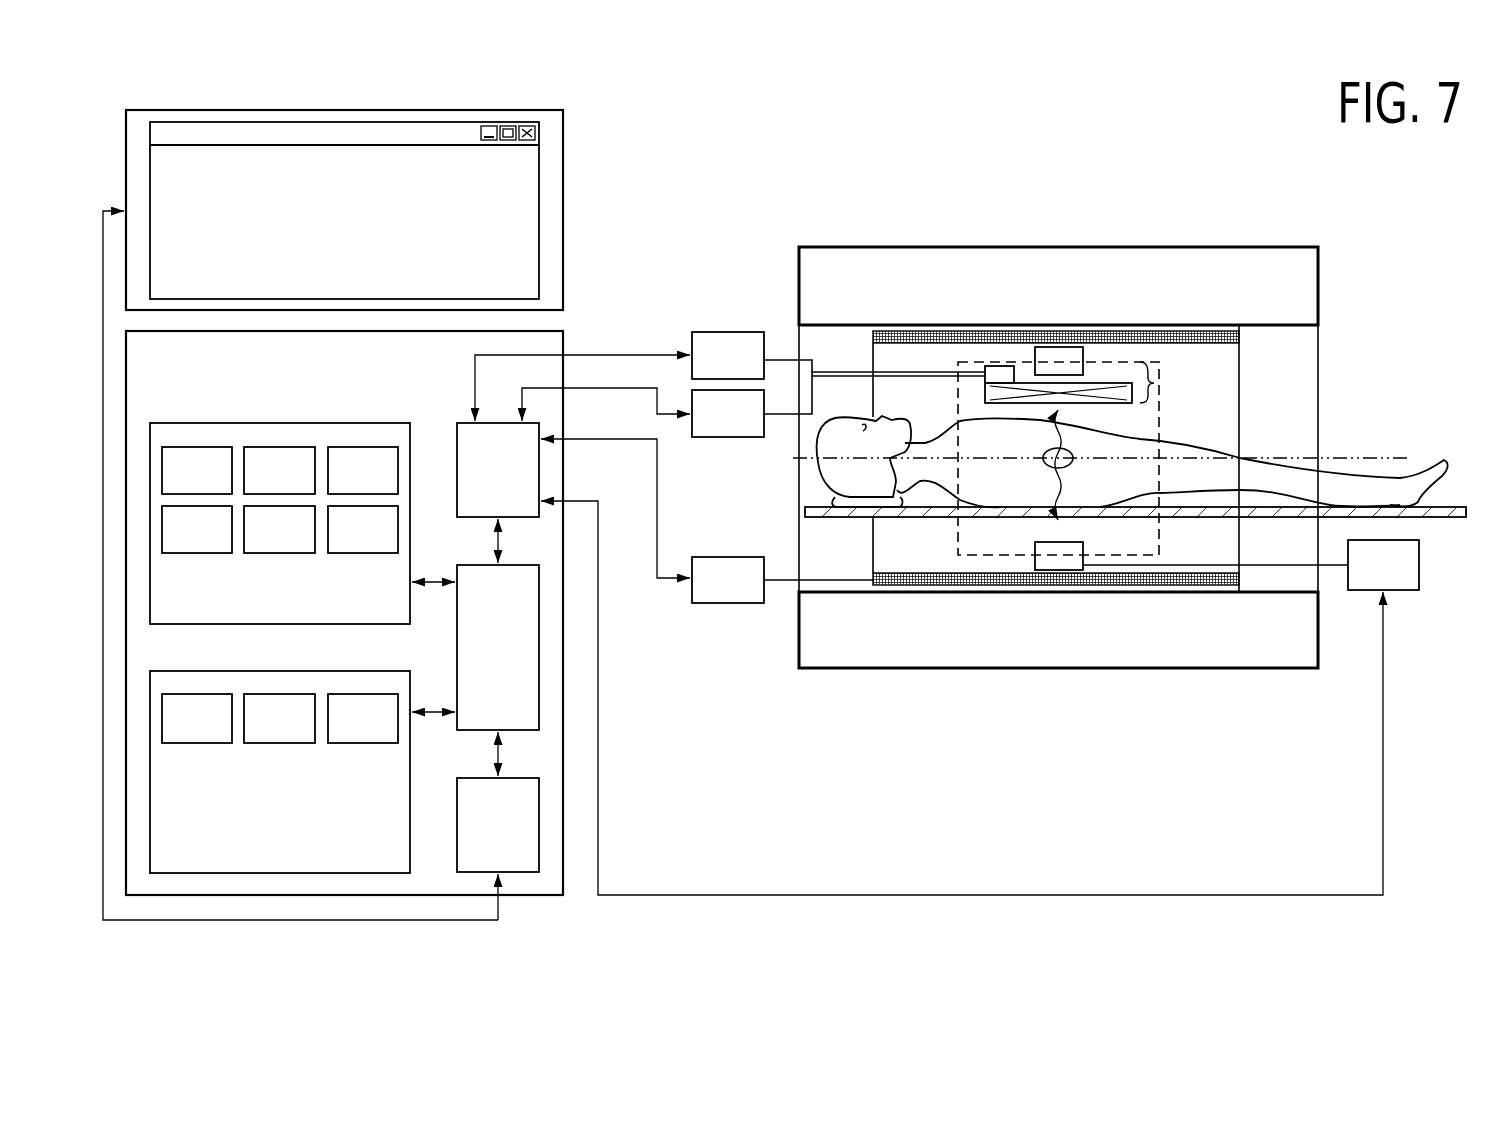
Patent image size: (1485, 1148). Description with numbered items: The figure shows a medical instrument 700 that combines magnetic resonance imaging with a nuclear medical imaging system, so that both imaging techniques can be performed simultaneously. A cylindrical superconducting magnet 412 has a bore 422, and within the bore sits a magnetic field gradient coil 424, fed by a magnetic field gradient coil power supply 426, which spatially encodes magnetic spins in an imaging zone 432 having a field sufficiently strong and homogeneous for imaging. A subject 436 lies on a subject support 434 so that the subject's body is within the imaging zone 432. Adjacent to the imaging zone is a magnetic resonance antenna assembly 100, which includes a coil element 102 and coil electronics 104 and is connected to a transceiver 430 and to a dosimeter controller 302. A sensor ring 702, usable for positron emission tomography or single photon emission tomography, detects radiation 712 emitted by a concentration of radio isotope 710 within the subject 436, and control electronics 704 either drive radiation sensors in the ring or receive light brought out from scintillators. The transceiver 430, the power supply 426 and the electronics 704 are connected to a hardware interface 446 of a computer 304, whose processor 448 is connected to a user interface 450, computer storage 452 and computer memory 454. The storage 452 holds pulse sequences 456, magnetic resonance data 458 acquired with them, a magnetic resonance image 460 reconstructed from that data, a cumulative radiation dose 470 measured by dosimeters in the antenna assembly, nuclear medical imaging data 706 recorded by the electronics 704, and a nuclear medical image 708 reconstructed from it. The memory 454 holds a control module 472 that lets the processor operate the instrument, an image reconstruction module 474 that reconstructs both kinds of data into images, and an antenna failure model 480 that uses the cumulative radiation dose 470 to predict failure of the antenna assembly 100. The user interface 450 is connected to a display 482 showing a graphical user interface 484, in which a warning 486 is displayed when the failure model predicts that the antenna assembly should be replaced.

The magnetic resonance antenna assembly 100 is at (1154, 383).
The coil antenna element 102 is at (1122, 398).
The coil electronics 104 is at (1000, 373).
The dosimeter controller 302 is at (749, 370).
The computer 304 is at (217, 372).
The magnet 412 is at (1318, 290).
The bore 422 is at (1284, 362).
The magnetic field gradient coil 424 is at (906, 336).
The magnetic field gradient coil power supply 426 is at (749, 593).
The transceiver 430 is at (749, 427).
The imaging zone 432 is at (958, 532).
The subject support 434 is at (840, 516).
The subject 436 is at (820, 478).
The hardware interface 446 is at (519, 488).
The processor 448 is at (519, 663).
The user interface 450 is at (519, 838).
The computer storage 452 is at (382, 603).
The computer memory 454 is at (382, 853).
The pulse sequences 456 is at (218, 487).
The magnetic resonance data 458 is at (301, 487).
The magnetic resonance image 460 is at (384, 487).
The cumulative radiation dose 470 is at (218, 545).
The control module 472 is at (218, 733).
The image reconstruction module 474 is at (301, 733).
The antenna failure model 480 is at (384, 733).
The display 482 is at (563, 148).
The graphical user interface 484 is at (539, 249).
The warning 486 is at (457, 158).
The medical instrument 700 is at (802, 181).
The sensor ring 702 is at (1052, 353).
The control electronics 704 is at (1404, 583).
The nuclear medical imaging data 706 is at (301, 545).
The nuclear medical image 708 is at (384, 545).
The concentration of radio isotope 710 is at (1070, 465).
The radiation 712 is at (1050, 440).